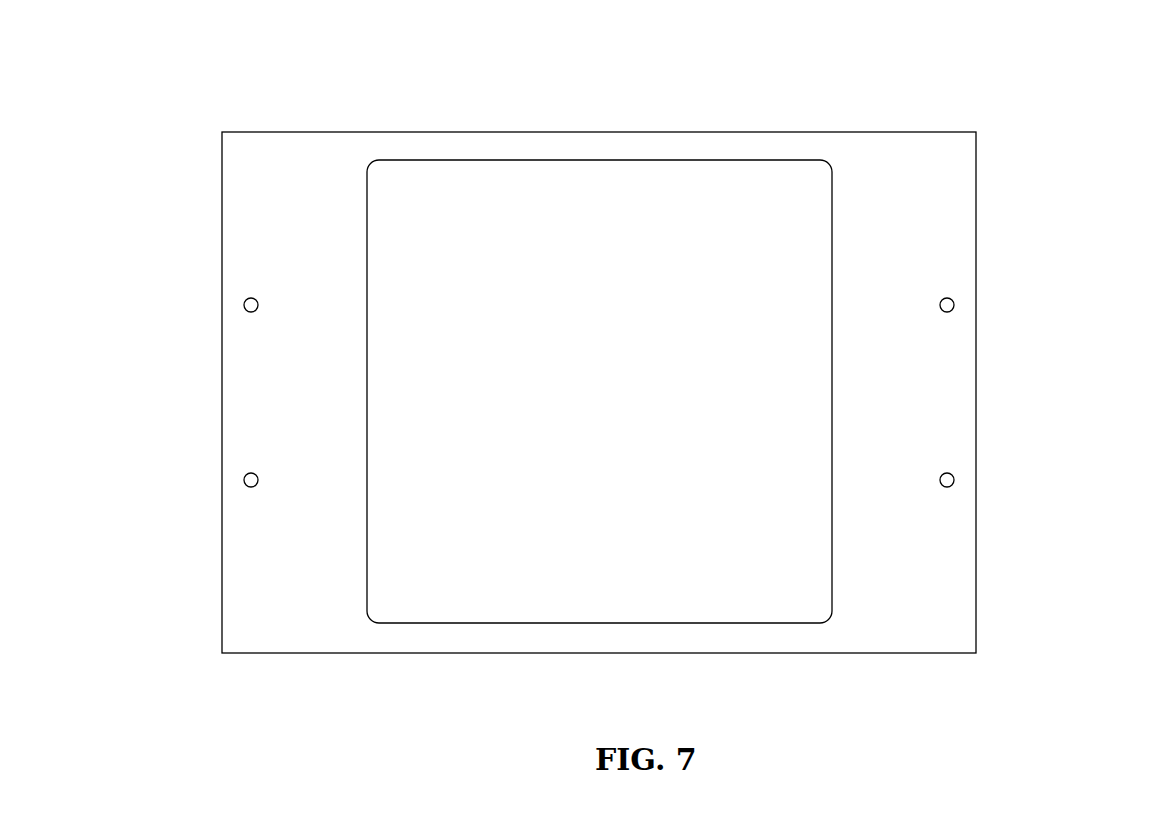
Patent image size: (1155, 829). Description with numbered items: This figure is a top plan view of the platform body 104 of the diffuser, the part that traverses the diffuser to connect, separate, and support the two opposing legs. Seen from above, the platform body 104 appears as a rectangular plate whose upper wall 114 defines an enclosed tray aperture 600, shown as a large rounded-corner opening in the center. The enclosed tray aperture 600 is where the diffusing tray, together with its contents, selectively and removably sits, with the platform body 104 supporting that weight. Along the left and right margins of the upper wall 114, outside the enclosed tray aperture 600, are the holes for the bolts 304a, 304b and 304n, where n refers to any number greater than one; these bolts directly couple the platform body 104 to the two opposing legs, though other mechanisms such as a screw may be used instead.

The platform body 104 is at (551, 127).
The upper wall 114 is at (323, 290).
The enclosed tray aperture 600 is at (628, 397).
The bolt 304a is at (243, 306).
The bolt 304b is at (243, 481).
The bolt 304n is at (956, 306).